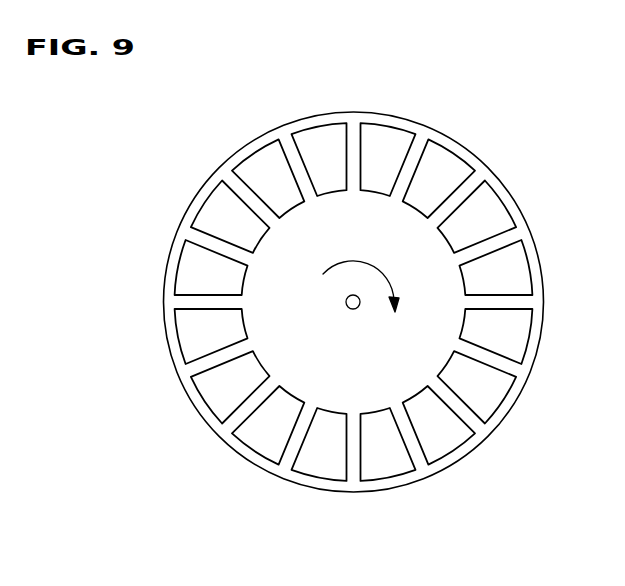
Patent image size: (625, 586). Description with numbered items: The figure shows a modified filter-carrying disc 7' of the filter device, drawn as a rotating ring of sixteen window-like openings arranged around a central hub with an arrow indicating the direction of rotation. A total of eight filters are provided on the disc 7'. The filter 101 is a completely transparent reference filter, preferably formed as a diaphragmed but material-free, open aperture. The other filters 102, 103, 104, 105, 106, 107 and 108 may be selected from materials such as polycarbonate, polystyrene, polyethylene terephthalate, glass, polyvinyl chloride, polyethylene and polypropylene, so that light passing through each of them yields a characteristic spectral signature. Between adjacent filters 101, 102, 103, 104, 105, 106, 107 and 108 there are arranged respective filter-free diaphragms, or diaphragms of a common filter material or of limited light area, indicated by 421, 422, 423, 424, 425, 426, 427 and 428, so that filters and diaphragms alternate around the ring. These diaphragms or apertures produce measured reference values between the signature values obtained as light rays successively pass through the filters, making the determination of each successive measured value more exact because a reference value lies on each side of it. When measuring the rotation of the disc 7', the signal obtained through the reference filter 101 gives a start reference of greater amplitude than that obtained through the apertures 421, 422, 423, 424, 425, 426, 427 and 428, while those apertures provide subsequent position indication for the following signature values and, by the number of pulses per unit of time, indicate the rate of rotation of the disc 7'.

The filter disc 7' is at (342, 290).
The reference filter 101 is at (220, 208).
The filter 102 is at (192, 342).
The filter 103 is at (267, 443).
The filter 104 is at (383, 457).
The filter 105 is at (483, 382).
The filter 106 is at (505, 272).
The filter 107 is at (442, 167).
The filter 108 is at (313, 152).
The diaphragm 421 is at (207, 285).
The diaphragm 422 is at (222, 383).
The diaphragm 423 is at (323, 457).
The diaphragm 424 is at (445, 437).
The diaphragm 425 is at (505, 335).
The diaphragm 426 is at (487, 212).
The diaphragm 427 is at (390, 143).
The diaphragm 428 is at (265, 175).